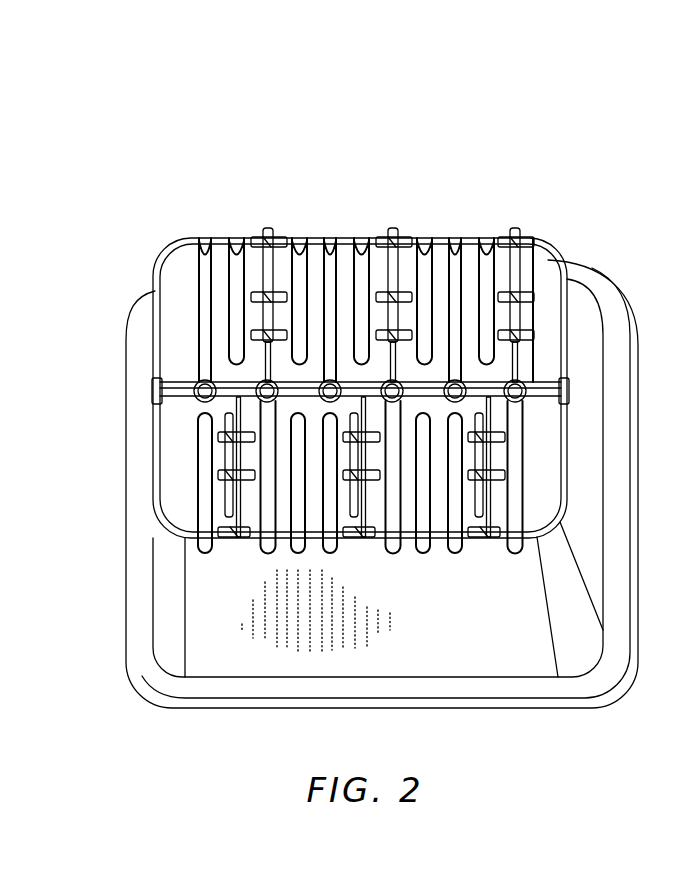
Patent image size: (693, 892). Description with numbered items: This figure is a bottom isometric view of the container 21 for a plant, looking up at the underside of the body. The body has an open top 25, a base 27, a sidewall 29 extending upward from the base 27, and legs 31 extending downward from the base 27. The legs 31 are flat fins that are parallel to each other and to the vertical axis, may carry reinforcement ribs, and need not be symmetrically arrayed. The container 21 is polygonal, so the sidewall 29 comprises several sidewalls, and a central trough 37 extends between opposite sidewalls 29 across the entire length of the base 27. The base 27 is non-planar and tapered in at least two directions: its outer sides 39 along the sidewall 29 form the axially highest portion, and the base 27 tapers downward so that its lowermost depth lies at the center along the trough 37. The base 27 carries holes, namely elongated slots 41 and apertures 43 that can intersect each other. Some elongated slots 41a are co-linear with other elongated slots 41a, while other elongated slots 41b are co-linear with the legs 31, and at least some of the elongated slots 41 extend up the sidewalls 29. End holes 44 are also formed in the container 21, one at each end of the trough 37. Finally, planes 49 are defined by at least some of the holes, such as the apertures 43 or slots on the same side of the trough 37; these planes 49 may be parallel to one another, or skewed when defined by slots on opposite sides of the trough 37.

The container 21 is at (239, 102).
The open top 25 is at (148, 690).
The base 27 is at (548, 262).
The sidewall 29 is at (580, 303).
The legs 31 is at (264, 231).
The trough 37 is at (554, 386).
The outer sides 39 is at (200, 239).
The elongated slots 41 is at (207, 314).
The elongated slots 41a is at (423, 267).
The elongated slots 41b is at (517, 554).
The apertures 43 is at (198, 384).
The end holes 44 is at (155, 392).
The planes 49 is at (190, 339).